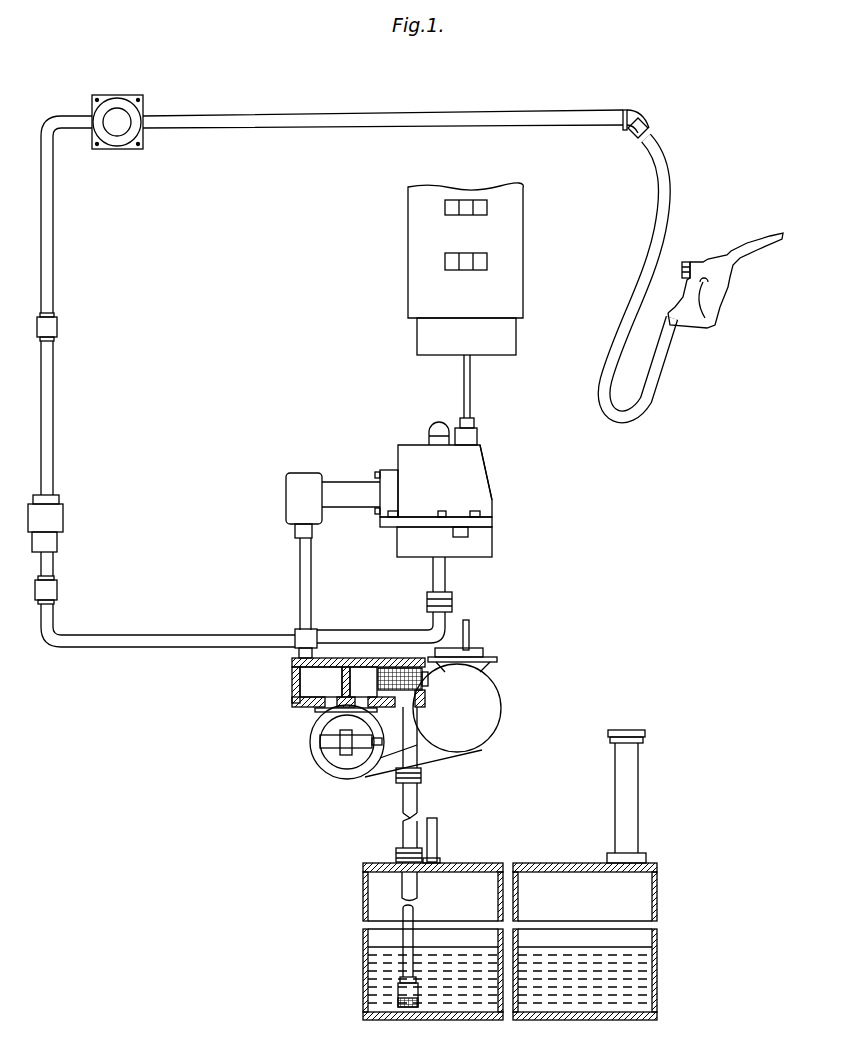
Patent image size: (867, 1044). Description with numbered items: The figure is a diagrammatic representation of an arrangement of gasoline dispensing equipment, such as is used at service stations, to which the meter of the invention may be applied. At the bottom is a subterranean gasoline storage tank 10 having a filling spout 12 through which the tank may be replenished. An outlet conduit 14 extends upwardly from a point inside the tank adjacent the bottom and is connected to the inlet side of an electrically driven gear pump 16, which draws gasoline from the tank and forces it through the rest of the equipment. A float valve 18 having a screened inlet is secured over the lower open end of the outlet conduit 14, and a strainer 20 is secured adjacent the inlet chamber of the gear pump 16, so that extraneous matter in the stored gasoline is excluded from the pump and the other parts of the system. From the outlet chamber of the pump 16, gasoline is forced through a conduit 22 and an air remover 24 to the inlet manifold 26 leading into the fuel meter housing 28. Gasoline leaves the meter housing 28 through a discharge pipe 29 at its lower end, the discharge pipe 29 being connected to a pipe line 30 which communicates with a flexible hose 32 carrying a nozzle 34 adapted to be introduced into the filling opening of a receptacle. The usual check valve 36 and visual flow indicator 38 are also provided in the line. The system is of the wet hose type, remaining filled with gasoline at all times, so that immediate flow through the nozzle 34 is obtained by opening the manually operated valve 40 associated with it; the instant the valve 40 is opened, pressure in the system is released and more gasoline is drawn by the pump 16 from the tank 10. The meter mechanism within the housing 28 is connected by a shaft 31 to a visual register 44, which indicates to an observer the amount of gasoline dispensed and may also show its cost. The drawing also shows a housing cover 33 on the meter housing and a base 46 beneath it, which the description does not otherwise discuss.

The subterranean gasoline storage tank 10 is at (643, 903).
The filling spout 12 is at (632, 801).
The outlet conduit 14 is at (410, 802).
The electrically driven gear pump 16 is at (338, 762).
The float valve 18 is at (405, 1010).
The strainer 20 is at (396, 672).
The conduit 22 is at (298, 593).
The air remover 24 is at (286, 500).
The inlet manifold 26 is at (338, 488).
The fuel meter housing 28 is at (505, 500).
The discharge pipe 29 is at (446, 586).
The pipe line 30 is at (305, 122).
The shaft 31 is at (470, 400).
The flexible hose 32 is at (662, 205).
The housing cover 33 is at (488, 462).
The nozzle 34 is at (755, 250).
The check valve 36 is at (66, 520).
The visual flow indicator 38 is at (120, 142).
The manually operated valve 40 is at (718, 316).
The visual register 44 is at (415, 275).
The valve base 46 is at (492, 540).